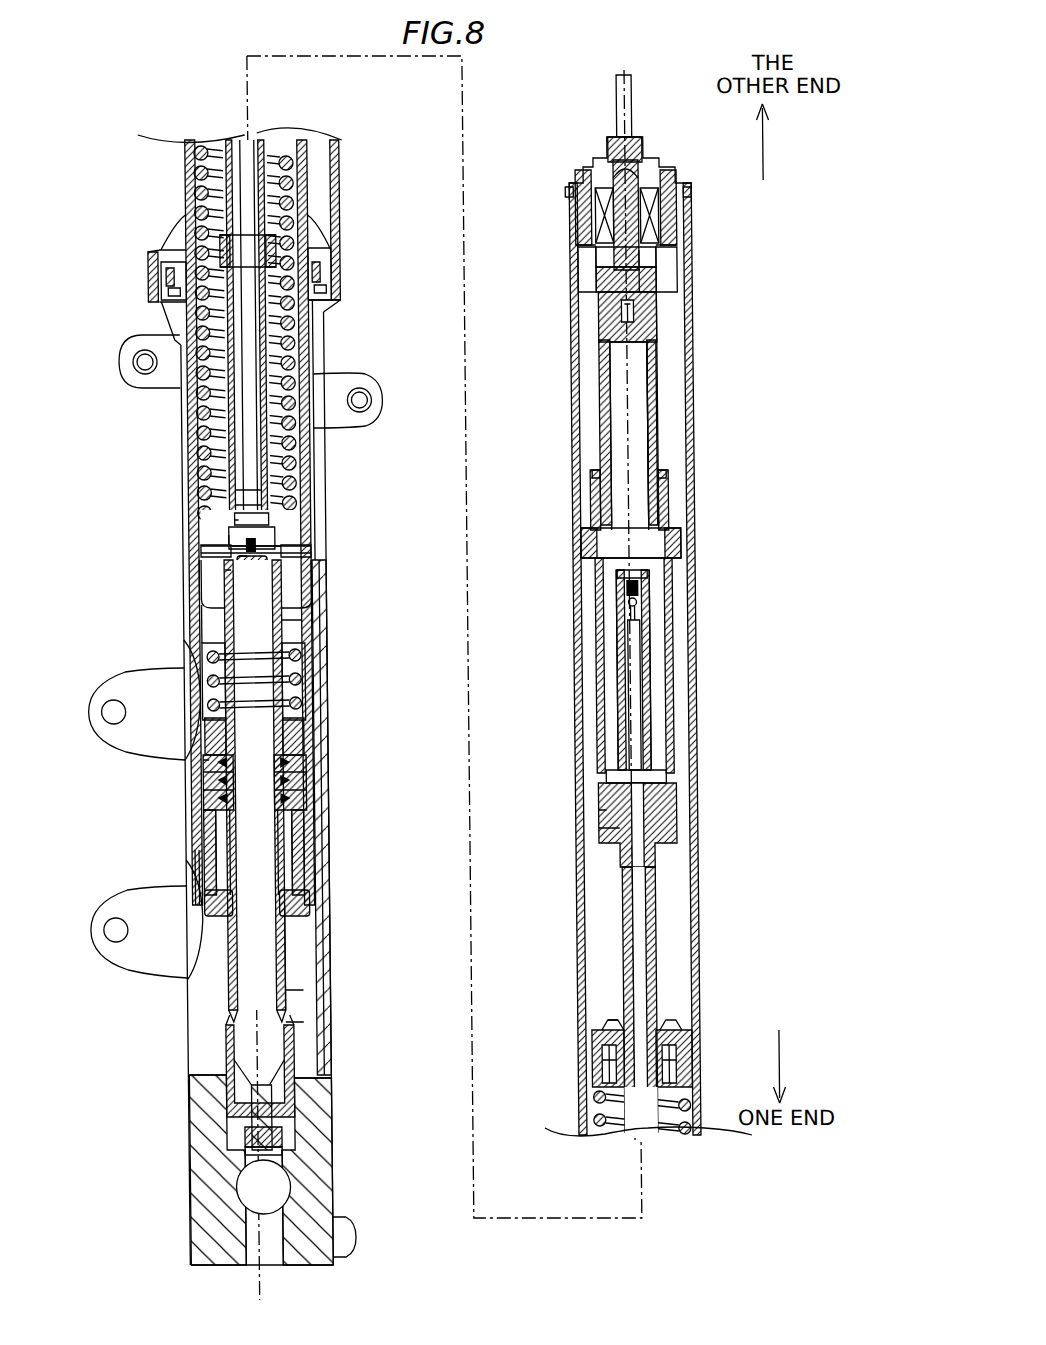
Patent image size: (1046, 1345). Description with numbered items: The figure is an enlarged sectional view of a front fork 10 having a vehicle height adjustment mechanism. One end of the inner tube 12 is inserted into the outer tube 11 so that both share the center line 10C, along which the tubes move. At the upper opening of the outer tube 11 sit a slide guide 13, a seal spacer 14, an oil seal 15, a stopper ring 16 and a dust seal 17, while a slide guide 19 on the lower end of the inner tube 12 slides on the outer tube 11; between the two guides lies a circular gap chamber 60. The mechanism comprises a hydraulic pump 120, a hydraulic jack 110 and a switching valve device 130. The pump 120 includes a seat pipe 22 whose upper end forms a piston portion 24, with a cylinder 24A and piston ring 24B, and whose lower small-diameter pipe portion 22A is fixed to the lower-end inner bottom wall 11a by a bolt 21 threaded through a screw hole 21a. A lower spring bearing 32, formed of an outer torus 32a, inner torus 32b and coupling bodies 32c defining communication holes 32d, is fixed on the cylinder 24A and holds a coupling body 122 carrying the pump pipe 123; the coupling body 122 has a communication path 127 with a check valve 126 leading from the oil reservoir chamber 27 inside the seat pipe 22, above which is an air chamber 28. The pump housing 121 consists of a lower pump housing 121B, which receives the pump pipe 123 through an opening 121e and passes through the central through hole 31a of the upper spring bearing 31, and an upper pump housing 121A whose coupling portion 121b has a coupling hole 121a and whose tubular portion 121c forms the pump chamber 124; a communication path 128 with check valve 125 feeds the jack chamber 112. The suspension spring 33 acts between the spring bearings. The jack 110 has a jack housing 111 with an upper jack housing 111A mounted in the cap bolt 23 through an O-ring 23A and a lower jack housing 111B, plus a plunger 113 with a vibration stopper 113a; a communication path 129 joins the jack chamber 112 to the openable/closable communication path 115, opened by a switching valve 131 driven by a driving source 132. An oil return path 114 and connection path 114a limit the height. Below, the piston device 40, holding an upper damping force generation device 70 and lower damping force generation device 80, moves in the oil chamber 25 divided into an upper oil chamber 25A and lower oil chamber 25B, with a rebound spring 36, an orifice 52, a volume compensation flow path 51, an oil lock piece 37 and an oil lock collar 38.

The front fork 10 is at (149, 186).
The center line 10C is at (633, 76).
The outer tube 11 is at (190, 472).
The lower-end inner bottom wall 11a is at (297, 1110).
The inner tube 12 is at (205, 580).
The slide guide 13 is at (178, 332).
The seal spacer 14 is at (180, 300).
The oil seal 15 is at (180, 278).
The stopper ring 16 is at (330, 262).
The dust seal 17 is at (188, 210).
The slide guide 19 is at (196, 872).
The bolt 21 is at (240, 1142).
The screw hole 21a is at (270, 1122).
The seat pipe 22 is at (200, 992).
The small-diameter pipe portion 22A is at (283, 950).
The cap bolt 23 is at (585, 170).
The O-ring 23A is at (692, 195).
The piston portion 24 is at (392, 548).
The cylinder 24A is at (282, 548).
The piston ring 24B is at (275, 560).
The oil chamber 25 is at (300, 1022).
The upper oil chamber 25A is at (295, 610).
The lower oil chamber 25B is at (300, 996).
The oil reservoir chamber 27 is at (232, 570).
The air chamber 28 is at (580, 370).
The upper spring bearing 31 is at (690, 1040).
The central through hole 31a is at (622, 1022).
The lower spring bearing 32 is at (390, 466).
The outer torus 32a is at (270, 525).
The inner torus 32b is at (262, 500).
The coupling bodies 32c is at (258, 515).
The communication hole 32d is at (232, 540).
The suspension spring 33 is at (300, 358).
The rebound spring 36 is at (215, 645).
The oil lock piece 37 is at (290, 1060).
The oil lock collar 38 is at (295, 905).
The piston device 40 is at (306, 762).
The volume compensation flow path 51 is at (232, 1040).
The orifice 52 is at (300, 622).
The circular gap chamber 60 is at (300, 695).
The upper damping force generation device 70 is at (205, 765).
The lower damping force generation device 80 is at (202, 836).
The hydraulic jack 110 is at (673, 352).
The jack housing 111 is at (675, 378).
The upper jack housing 111A is at (650, 255).
The lower jack housing 111B is at (660, 397).
The jack chamber 112 is at (648, 432).
The plunger 113 is at (670, 628).
The vibration stopper 113a is at (685, 540).
The oil return path 114 is at (675, 495).
The connection path 114a is at (672, 478).
The openable/closable communication path 115 is at (612, 268).
The hydraulic pump 120 is at (673, 724).
The pump housing 121 is at (685, 826).
The coupling hole 121a is at (620, 826).
The coupling portion 121b is at (600, 820).
The tubular portion 121c is at (612, 710).
The opening 121e is at (305, 312).
The upper pump housing 121A is at (652, 682).
The lower pump housing 121B is at (655, 972).
The coupling body 122 is at (240, 522).
The pump pipe 123 is at (245, 412).
The pump chamber 124 is at (630, 660).
The check valve 125 is at (640, 595).
The check valve 126 is at (245, 556).
The communication path 127 is at (245, 590).
The communication path 128 is at (640, 610).
The communication path 129 is at (650, 315).
The switching valve device 130 is at (592, 217).
The switching valve 131 is at (632, 165).
The driving source 132 is at (655, 190).